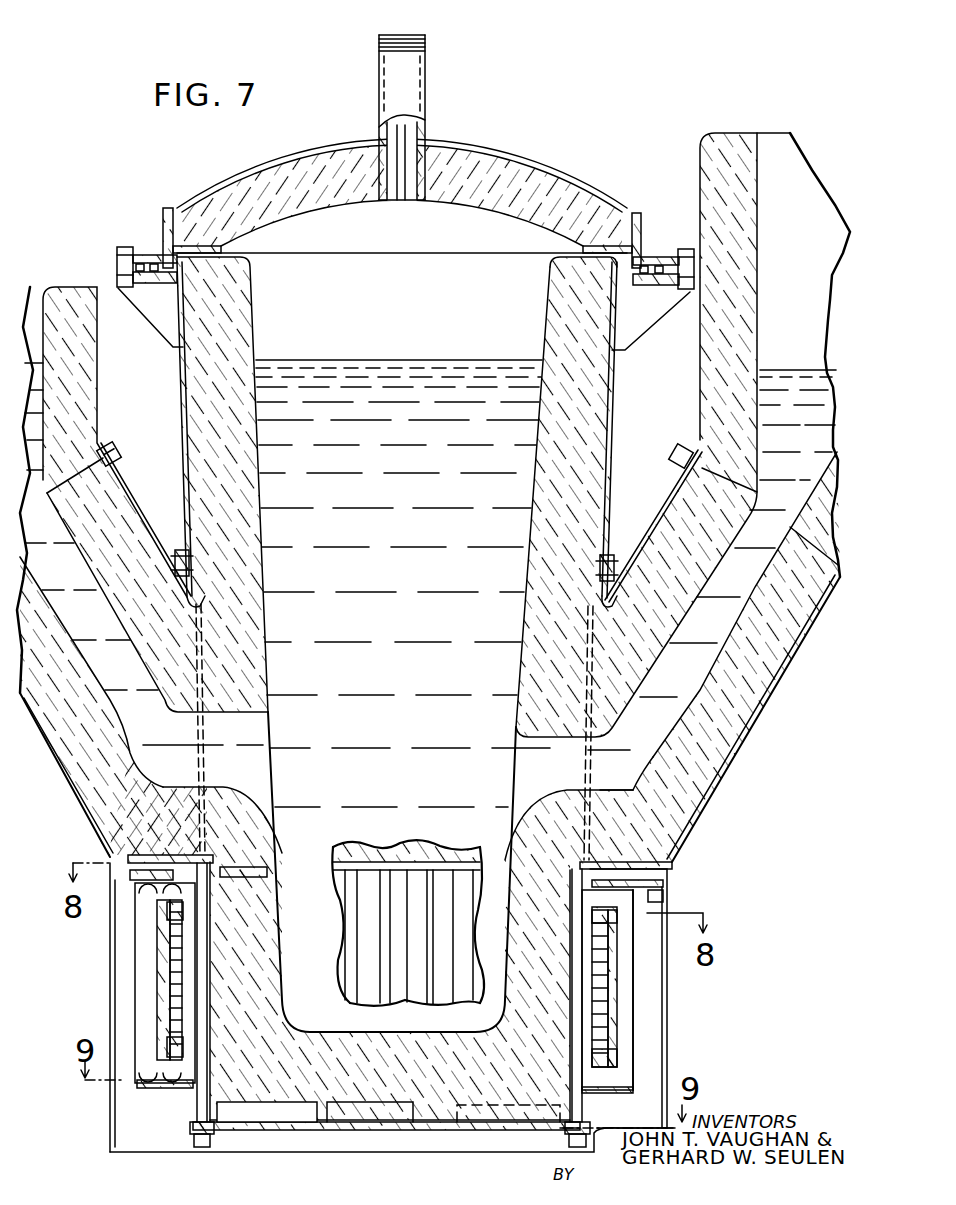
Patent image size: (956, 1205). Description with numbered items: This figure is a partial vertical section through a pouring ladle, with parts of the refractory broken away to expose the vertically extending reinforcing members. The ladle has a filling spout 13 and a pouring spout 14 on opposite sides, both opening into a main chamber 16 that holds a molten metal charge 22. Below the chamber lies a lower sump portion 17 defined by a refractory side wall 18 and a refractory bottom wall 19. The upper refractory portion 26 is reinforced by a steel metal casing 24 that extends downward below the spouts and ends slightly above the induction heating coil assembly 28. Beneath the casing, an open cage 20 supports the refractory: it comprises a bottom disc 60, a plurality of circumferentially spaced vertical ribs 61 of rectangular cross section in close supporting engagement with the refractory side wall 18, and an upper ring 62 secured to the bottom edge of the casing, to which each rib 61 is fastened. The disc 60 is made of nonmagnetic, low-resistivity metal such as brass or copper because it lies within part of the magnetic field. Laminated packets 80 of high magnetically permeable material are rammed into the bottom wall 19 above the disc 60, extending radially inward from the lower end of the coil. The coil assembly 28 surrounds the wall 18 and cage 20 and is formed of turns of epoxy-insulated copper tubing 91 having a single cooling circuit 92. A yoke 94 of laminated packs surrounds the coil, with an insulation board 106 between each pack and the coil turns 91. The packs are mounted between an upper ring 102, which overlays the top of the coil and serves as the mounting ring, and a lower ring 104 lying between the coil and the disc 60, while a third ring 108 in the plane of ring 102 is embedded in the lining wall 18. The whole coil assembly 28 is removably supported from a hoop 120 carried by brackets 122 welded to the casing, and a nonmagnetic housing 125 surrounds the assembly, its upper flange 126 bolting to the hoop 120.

The filling spout 13 is at (762, 710).
The pouring spout 14 is at (100, 397).
The main chamber 16 is at (539, 500).
The lower sump portion 17 is at (499, 936).
The refractory side wall 18 is at (552, 994).
The refractory bottom wall 19 is at (387, 1075).
The cage 20 is at (585, 1119).
The molten metal charge 22 is at (407, 546).
The metal casing 24 is at (611, 449).
The upper refractory portion 26 is at (601, 406).
The induction heating coil assembly 28 is at (637, 1043).
The bottom disc 60 is at (307, 1132).
The vertically extending ribs 61 is at (205, 1010).
The upper ring 62 is at (220, 858).
The packets of high magnetically permeable material 80 is at (287, 1103).
The copper tubing 91 is at (160, 952).
The cooling circuit 92 is at (183, 912).
The yoke 94 is at (637, 1012).
The upper ring 102 is at (112, 882).
The lower ring 104 is at (152, 1089).
The insulation board 106 is at (620, 985).
The third ring 108 is at (226, 881).
The hoop 120 is at (642, 863).
The brackets 122 is at (620, 820).
The nonmagnetic housing 125 is at (670, 1062).
The upper flange 126 is at (664, 898).